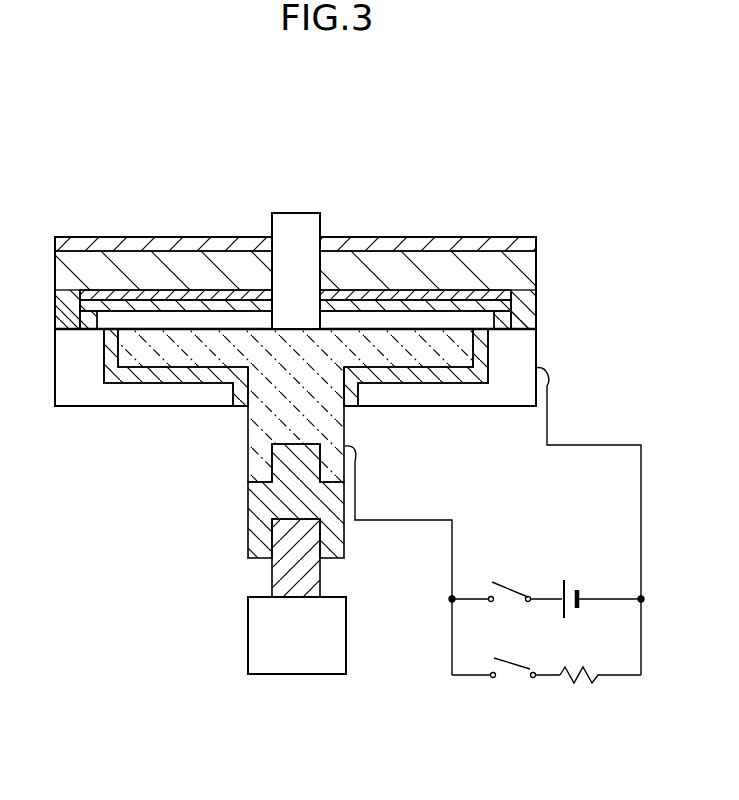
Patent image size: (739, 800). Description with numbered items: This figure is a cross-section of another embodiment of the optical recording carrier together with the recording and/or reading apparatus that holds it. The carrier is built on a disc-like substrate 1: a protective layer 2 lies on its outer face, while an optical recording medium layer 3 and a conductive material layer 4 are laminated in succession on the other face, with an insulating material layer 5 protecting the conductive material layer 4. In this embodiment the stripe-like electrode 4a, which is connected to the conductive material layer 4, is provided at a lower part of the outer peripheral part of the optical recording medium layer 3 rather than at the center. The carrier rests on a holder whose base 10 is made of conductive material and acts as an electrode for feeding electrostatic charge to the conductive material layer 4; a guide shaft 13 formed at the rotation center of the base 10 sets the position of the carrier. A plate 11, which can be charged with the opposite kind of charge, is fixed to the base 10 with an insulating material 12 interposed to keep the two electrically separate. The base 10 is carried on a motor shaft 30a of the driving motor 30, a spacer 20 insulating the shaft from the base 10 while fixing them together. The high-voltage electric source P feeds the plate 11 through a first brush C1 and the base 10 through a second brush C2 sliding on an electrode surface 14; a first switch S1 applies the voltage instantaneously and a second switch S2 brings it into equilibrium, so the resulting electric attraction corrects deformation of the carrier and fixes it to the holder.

The substrate 1 is at (190, 250).
The protective layer 2 is at (115, 243).
The optical recording medium layer 3 is at (510, 297).
The conductive material layer 4 is at (456, 302).
The electrode 4a is at (506, 308).
The insulating material layer 5 is at (376, 320).
The base 10 is at (68, 395).
The plate 11 is at (248, 448).
The insulating material 12 is at (155, 388).
The guide shaft 13 is at (285, 222).
The electrode surface 14 is at (537, 352).
The spacer 20 is at (250, 508).
The driving motor 30 is at (293, 660).
The motor shaft 30a is at (282, 571).
The first brush C1 is at (356, 483).
The second brush C2 is at (548, 405).
The first switch S1 is at (497, 580).
The second switch S2 is at (522, 672).
The high-voltage electric source P is at (565, 580).